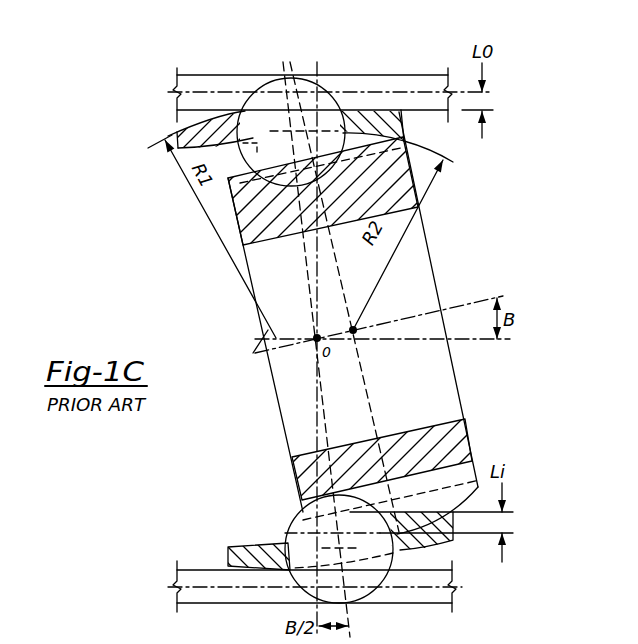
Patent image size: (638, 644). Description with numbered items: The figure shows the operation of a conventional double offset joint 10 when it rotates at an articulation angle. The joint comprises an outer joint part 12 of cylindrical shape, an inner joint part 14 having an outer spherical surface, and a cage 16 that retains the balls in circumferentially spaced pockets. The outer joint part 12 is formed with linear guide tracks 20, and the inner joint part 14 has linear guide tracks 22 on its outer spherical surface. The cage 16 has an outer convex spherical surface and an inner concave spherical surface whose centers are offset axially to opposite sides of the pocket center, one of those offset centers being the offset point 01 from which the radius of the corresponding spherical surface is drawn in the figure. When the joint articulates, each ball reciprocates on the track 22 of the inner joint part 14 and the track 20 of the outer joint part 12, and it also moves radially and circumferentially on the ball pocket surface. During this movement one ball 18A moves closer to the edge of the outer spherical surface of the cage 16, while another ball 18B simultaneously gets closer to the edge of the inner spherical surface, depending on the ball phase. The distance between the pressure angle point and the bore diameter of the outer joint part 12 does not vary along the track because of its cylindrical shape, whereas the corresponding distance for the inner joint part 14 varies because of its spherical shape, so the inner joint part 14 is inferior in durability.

The double offset joint 10 is at (323, 323).
The outer joint part 12 is at (362, 87).
The inner joint part 14 is at (274, 387).
The cage 16 is at (382, 113).
The ball 18A is at (250, 96).
The ball 18B is at (292, 524).
The linear guide track 20 is at (178, 101).
The linear guide track 22 is at (395, 154).
The offset point 01 is at (354, 329).